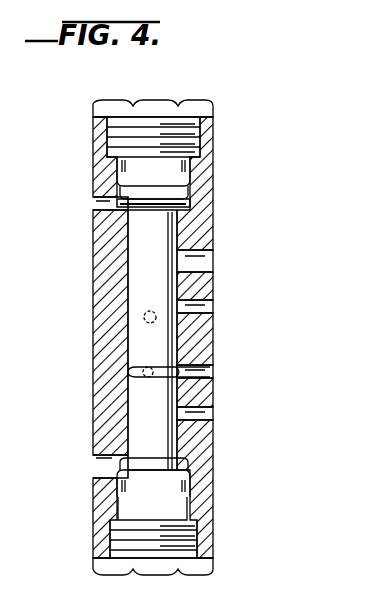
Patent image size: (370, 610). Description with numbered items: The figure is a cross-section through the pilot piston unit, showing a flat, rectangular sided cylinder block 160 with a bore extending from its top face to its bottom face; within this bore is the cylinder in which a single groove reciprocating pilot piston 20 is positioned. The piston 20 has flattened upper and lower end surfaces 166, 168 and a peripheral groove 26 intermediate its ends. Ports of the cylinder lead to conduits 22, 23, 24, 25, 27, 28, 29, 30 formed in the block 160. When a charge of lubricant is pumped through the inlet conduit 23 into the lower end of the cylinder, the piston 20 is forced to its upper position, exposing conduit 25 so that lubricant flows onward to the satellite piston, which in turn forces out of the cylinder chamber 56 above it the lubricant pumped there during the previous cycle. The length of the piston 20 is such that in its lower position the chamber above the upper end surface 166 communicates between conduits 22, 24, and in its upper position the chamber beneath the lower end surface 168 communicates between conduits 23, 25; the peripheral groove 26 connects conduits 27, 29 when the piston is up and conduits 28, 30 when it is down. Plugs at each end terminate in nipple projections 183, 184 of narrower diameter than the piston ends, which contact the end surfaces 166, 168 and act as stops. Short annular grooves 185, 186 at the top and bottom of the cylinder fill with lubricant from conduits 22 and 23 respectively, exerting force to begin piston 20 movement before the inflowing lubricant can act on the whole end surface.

The pilot piston 20 is at (165, 347).
The conduit 22 is at (92, 210).
The inlet conduit 23 is at (100, 468).
The conduit 24 is at (213, 262).
The conduit 25 is at (212, 416).
The peripheral groove 26 is at (128, 374).
The conduit 27 is at (210, 307).
The conduit 28 is at (210, 373).
The conduit 29 is at (144, 317).
The conduit 30 is at (147, 380).
The cylinder chamber 56 is at (158, 248).
The cylinder block 160 is at (207, 186).
The upper end surface 166 is at (130, 268).
The lower end surface 168 is at (157, 470).
The nipple projection 183 is at (200, 209).
The nipple projection 184 is at (185, 488).
The annular groove 185 is at (122, 190).
The annular groove 186 is at (128, 458).